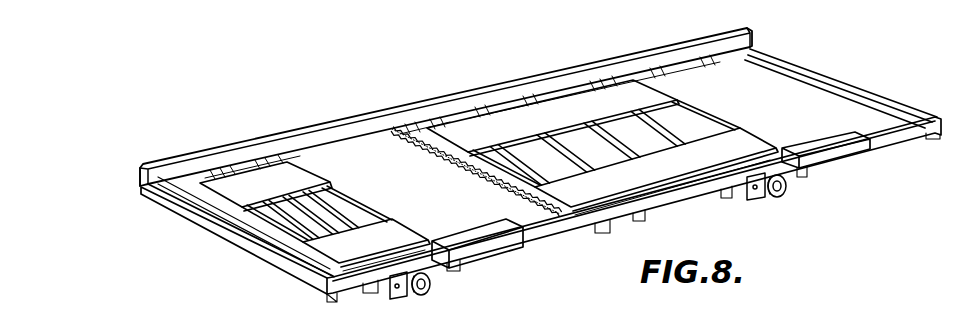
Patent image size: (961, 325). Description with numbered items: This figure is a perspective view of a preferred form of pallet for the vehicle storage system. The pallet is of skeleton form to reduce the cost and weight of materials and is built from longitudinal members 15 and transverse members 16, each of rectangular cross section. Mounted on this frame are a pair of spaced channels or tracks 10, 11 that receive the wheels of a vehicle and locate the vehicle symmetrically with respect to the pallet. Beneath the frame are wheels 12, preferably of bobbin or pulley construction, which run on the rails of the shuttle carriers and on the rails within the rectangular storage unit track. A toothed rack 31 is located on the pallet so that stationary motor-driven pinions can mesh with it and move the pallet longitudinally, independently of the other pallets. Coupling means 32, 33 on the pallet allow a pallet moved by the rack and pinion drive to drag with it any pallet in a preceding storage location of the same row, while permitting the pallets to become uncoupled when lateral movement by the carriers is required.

The channel or track 10 is at (310, 180).
The channel or track 11 is at (410, 237).
The wheels 12 is at (427, 291).
The longitudinal members 15 is at (480, 102).
The transverse members 16 is at (227, 228).
The rack 31 is at (502, 183).
The coupling means 32 is at (496, 248).
The coupling means 33 is at (838, 157).